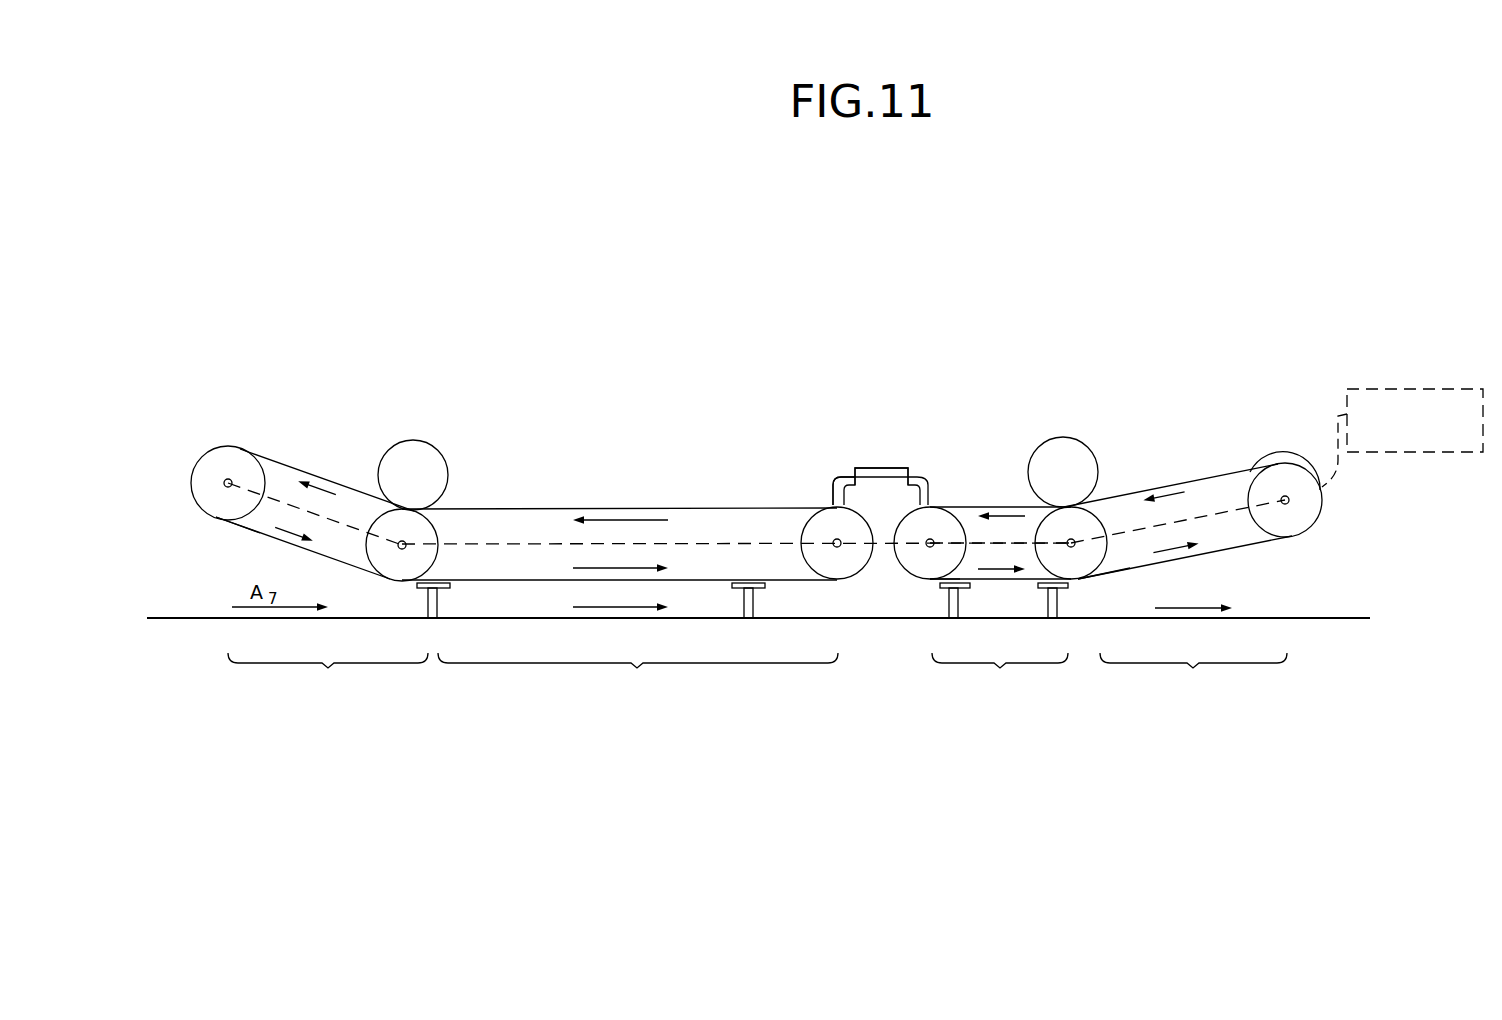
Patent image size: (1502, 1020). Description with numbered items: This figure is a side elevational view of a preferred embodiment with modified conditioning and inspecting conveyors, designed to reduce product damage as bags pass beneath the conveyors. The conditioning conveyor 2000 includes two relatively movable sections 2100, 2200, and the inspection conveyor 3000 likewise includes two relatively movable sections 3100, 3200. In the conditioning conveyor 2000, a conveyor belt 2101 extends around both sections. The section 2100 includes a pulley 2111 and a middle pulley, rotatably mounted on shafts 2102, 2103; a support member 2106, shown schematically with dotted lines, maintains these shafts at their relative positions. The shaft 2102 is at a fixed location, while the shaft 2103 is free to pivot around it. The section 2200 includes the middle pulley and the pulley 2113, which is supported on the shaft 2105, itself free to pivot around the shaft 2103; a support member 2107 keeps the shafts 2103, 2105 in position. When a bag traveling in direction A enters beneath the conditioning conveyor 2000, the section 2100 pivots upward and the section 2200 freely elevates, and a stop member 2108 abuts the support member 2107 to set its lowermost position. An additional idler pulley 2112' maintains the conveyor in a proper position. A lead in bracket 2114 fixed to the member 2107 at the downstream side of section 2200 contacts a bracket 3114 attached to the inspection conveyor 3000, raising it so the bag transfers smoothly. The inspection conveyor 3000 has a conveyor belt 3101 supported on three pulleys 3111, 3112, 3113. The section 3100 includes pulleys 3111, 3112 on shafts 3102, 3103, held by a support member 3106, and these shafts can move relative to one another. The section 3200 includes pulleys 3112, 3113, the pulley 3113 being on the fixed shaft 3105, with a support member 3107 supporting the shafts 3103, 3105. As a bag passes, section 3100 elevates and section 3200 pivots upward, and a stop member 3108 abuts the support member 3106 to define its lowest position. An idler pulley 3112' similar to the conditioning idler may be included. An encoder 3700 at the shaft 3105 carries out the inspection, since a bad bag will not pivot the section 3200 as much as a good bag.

The conditioning conveyor 2000 is at (450, 326).
The inspection conveyor 3000 is at (1130, 380).
The section of conditioning conveyor 2100 is at (369, 537).
The section of conditioning conveyor 2200 is at (724, 536).
The section of inspection conveyor 3100 is at (964, 573).
The section of inspection conveyor 3200 is at (1191, 556).
The conveyor belt 2101 is at (292, 460).
The shaft 2102 is at (228, 483).
The shaft 2103 is at (404, 545).
The shaft 2105 is at (837, 543).
The support member 2106 is at (343, 522).
The support member 2107 is at (548, 543).
The stop member 2108 is at (437, 602).
The pulley 2111 is at (184, 491).
The idler pulley 2112' is at (454, 438).
The pulley 2113 is at (839, 500).
The lead in bracket 2114 is at (870, 485).
The conveyor belt 3101 is at (1003, 507).
The shaft 3102 is at (930, 546).
The shaft 3103 is at (1071, 548).
The shaft 3105 is at (1285, 505).
The support member 3106 is at (973, 543).
The support member 3107 is at (1235, 507).
The stop member 3108 is at (1044, 596).
The pulley 3111 is at (899, 565).
The pulley 3112 is at (1114, 661).
The idler pulley 3112' is at (1101, 467).
The pulley 3113 is at (1290, 463).
The bracket 3114 is at (889, 468).
The encoder 3700 is at (1390, 452).